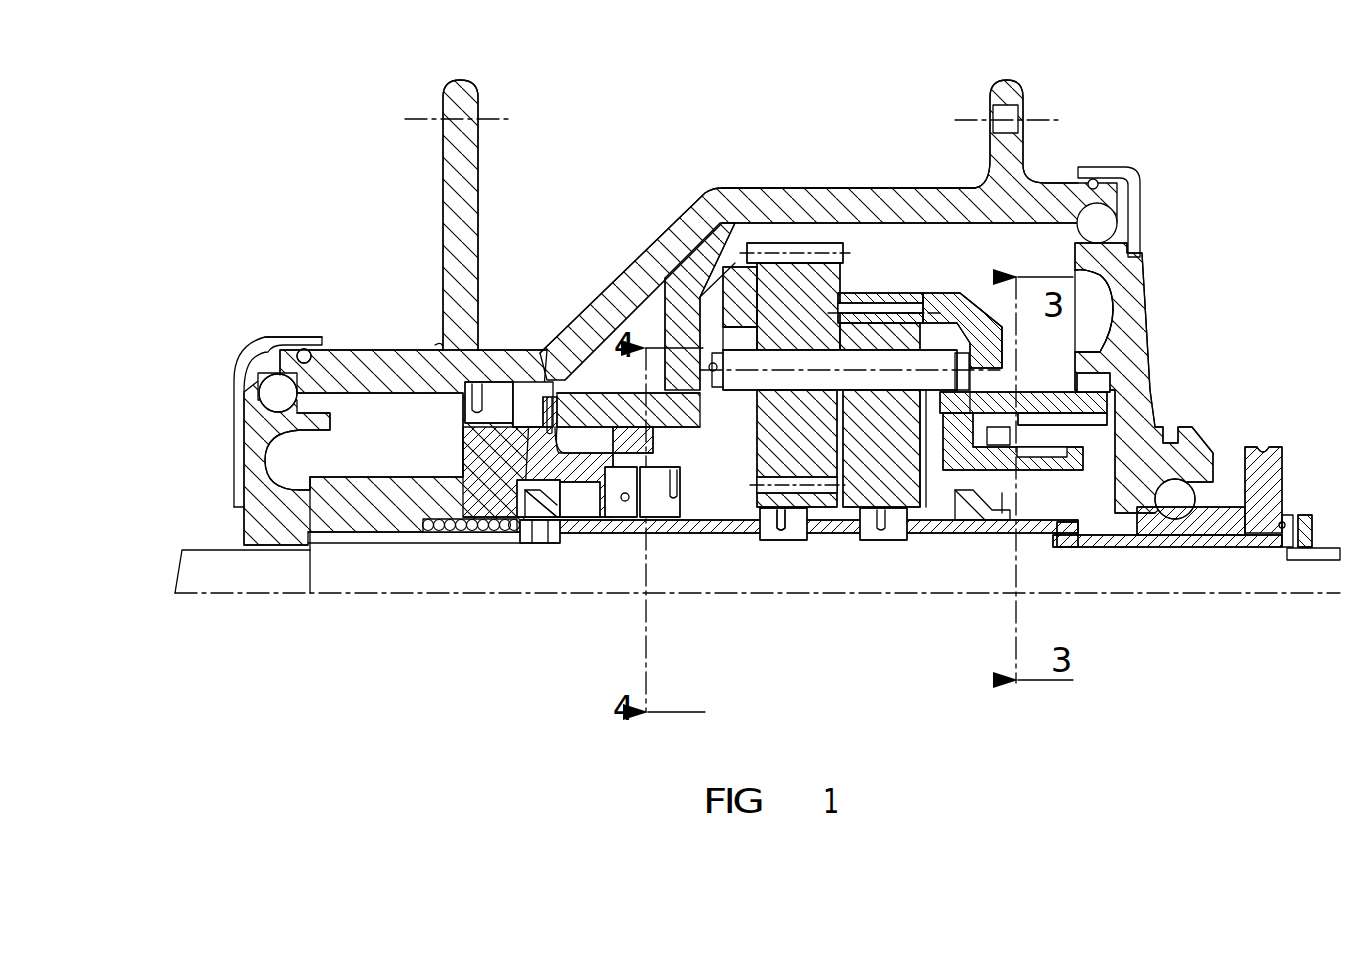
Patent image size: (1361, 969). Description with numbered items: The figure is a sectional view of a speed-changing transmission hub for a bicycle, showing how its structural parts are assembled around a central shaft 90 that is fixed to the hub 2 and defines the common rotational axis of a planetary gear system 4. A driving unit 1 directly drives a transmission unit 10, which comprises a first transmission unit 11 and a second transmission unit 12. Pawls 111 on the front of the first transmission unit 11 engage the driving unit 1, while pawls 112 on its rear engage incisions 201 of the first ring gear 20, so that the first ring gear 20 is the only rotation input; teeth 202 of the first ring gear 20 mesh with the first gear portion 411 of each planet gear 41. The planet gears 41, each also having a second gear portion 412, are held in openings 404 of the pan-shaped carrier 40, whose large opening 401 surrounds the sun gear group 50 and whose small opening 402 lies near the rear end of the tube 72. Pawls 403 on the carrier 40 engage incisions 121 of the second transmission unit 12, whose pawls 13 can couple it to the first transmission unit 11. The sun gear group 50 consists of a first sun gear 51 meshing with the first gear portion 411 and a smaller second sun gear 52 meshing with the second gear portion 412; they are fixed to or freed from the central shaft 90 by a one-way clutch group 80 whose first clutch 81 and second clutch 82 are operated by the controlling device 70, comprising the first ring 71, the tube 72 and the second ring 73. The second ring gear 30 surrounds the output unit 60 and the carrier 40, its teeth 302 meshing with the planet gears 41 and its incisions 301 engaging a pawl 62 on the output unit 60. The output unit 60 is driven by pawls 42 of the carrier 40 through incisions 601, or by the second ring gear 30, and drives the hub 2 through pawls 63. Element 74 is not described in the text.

The driving unit 1 is at (1123, 283).
The hub 2 is at (365, 355).
The planetary gear system 4 is at (745, 330).
The transmission unit 10 is at (1079, 478).
The first transmission unit 11 is at (1085, 403).
The second transmission unit 12 is at (1043, 472).
The pawls 13 is at (1002, 513).
The first ring gear 20 is at (977, 235).
The second ring gear 30 is at (686, 225).
The carrier 40 is at (655, 262).
The planet gears 41 is at (847, 240).
The pawls 42 is at (625, 530).
The sun gear group 50 is at (817, 518).
The first sun gear 51 is at (852, 540).
The second sun gear 52 is at (800, 537).
The output unit 60 is at (355, 517).
The pawl 62 is at (572, 540).
The pawls 63 is at (440, 345).
The controlling device 70 is at (1160, 552).
The first ring 71 is at (520, 540).
The tube 72 is at (560, 548).
The second ring 73 is at (973, 505).
The post 74 is at (1248, 536).
The one-way clutch group 80 is at (757, 550).
The first clutch 81 is at (882, 532).
The second clutch 82 is at (770, 540).
The central shaft 90 is at (373, 590).
The pawls 111 is at (1112, 355).
The pawls 112 is at (1000, 367).
The incisions 121 is at (1062, 388).
The incisions 201 is at (975, 315).
The teeth 202 is at (928, 293).
The incisions 301 is at (537, 393).
The teeth 302 is at (860, 260).
The large opening 401 is at (740, 522).
The small opening 402 is at (645, 522).
The pawls 403 is at (937, 470).
The openings 404 is at (705, 300).
The first gear portion 411 is at (880, 303).
The second gear portion 412 is at (755, 243).
The incisions 601 is at (583, 500).